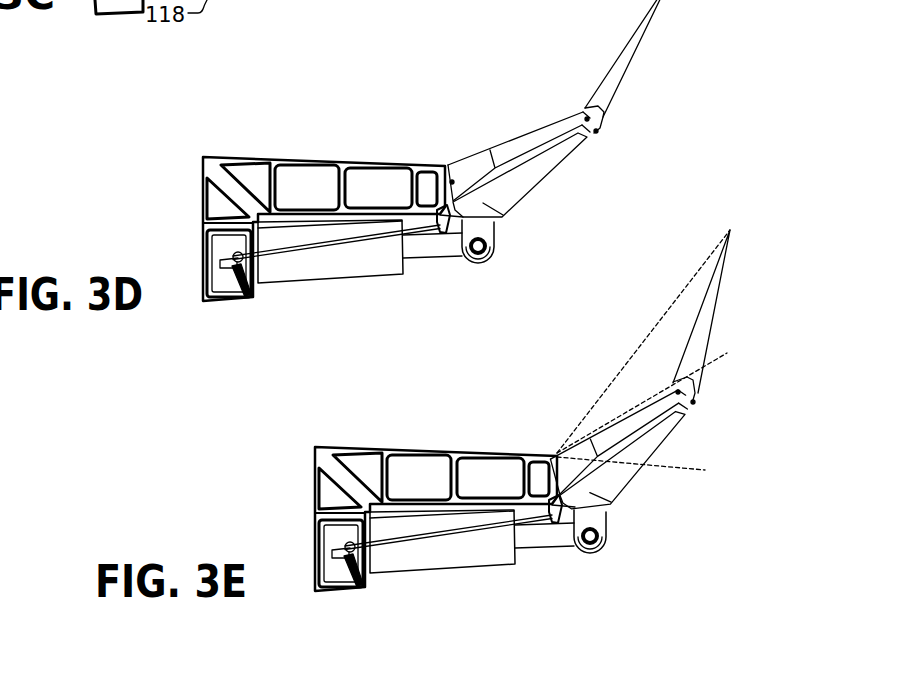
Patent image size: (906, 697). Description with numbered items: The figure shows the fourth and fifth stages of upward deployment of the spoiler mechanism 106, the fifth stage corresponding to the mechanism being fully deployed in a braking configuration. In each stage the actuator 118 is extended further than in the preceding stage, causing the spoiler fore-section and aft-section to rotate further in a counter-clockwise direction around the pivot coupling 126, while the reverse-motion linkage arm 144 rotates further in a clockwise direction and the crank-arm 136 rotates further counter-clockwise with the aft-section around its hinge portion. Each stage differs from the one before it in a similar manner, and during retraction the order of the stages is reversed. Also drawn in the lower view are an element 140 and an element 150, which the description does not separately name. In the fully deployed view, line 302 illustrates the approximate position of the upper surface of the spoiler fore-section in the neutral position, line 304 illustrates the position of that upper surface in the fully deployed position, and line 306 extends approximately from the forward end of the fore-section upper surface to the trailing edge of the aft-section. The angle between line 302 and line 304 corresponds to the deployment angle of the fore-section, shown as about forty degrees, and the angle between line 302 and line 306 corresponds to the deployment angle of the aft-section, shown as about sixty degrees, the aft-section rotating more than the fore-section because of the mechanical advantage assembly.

In FIG. 3D, the spoiler mechanism 106 is at (145, 163).
In FIG. 3E, the spoiler mechanism 106 is at (457, 416).
In FIG. 3D, the actuator 118 is at (320, 280).
In FIG. 3E, the actuator 118 is at (477, 570).
In FIG. 3D, the pivot coupling 126 is at (450, 180).
In FIG. 3D, the crank-arm 136 is at (598, 128).
In FIG. 3E, the crank-arm 136 is at (693, 402).
In FIG. 3D, the actuator rod 140 is at (330, 247).
In FIG. 3E, the actuator rod 140 is at (437, 538).
In FIG. 3D, the reverse-motion linkage arm 144 is at (498, 222).
In FIG. 3E, the reverse-motion linkage arm 144 is at (570, 547).
In FIG. 3D, the strut 150 is at (541, 173).
In FIG. 3E, the strut 150 is at (667, 437).
In FIG. 3E, the line 302 is at (653, 468).
In FIG. 3E, the line 304 is at (613, 420).
In FIG. 3E, the line 306 is at (648, 338).